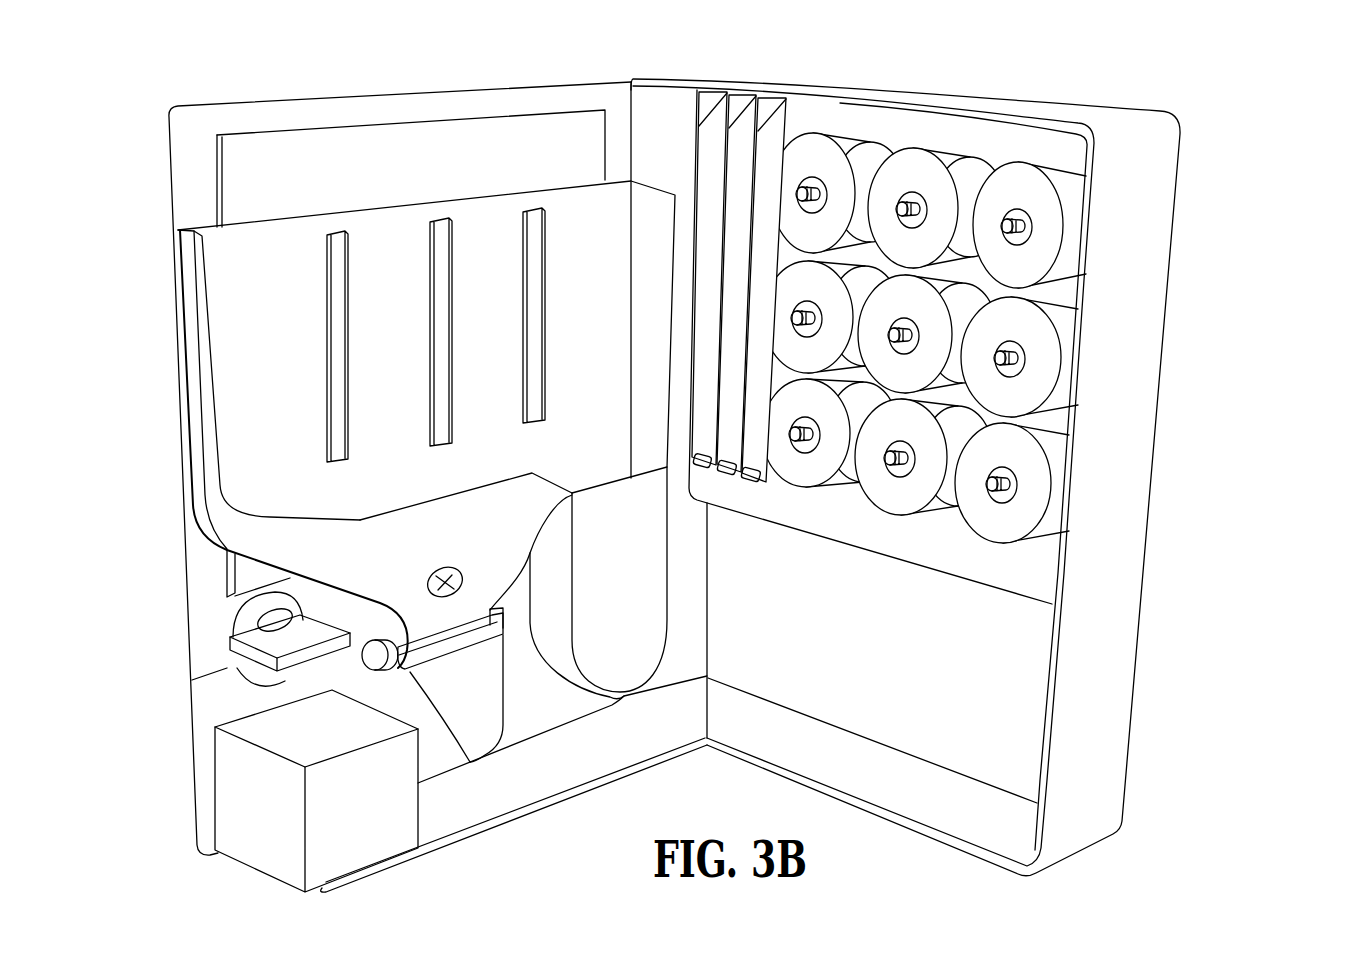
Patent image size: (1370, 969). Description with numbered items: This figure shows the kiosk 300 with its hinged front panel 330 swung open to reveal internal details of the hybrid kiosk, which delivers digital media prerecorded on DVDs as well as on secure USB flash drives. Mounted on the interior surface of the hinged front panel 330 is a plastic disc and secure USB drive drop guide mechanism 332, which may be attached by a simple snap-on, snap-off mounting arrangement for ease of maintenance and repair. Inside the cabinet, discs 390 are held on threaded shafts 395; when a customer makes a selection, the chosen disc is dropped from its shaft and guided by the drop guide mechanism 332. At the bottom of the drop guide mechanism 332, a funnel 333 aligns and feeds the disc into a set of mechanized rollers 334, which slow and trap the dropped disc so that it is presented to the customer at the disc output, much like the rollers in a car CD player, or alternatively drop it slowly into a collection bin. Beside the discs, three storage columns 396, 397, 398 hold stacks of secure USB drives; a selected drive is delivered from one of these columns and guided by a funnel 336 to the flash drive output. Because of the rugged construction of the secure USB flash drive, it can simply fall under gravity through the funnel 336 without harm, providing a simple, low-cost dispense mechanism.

The kiosk 300 is at (1255, 85).
The hinged front panel 330 is at (312, 98).
The drop guide mechanism 332 is at (254, 298).
The funnel 333 is at (460, 542).
The mechanized rollers 334 is at (437, 646).
The funnel 336 is at (640, 619).
The discs 390 is at (1020, 187).
The threaded shafts 395 is at (1022, 228).
The storage column 396 is at (728, 102).
The storage column 397 is at (753, 103).
The storage column 398 is at (780, 107).